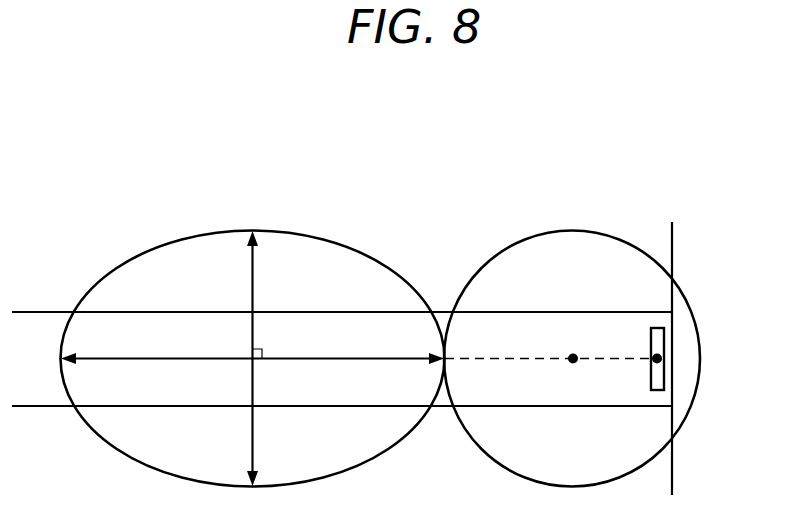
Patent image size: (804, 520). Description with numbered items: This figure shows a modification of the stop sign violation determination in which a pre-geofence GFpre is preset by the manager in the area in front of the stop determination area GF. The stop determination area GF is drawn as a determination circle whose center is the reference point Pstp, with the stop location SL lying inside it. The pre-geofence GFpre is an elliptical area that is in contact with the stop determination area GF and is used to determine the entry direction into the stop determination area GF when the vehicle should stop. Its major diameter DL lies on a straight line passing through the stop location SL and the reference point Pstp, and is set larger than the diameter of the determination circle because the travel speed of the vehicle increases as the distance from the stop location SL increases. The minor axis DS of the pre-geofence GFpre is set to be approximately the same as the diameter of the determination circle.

The pre-geofence GFpre is at (327, 240).
The minor axis DS is at (253, 284).
The major diameter DL is at (330, 358).
The stop determination area GF is at (692, 310).
The reference point Pstp is at (573, 343).
The stop location SL is at (662, 358).